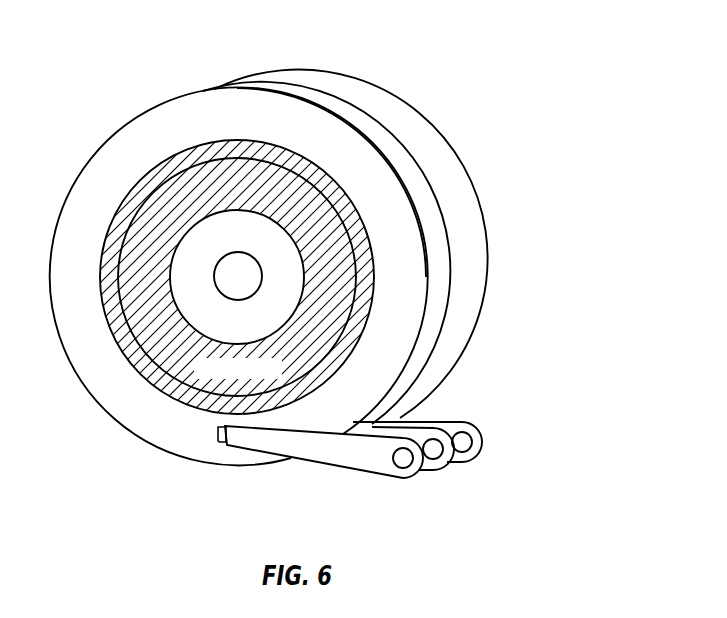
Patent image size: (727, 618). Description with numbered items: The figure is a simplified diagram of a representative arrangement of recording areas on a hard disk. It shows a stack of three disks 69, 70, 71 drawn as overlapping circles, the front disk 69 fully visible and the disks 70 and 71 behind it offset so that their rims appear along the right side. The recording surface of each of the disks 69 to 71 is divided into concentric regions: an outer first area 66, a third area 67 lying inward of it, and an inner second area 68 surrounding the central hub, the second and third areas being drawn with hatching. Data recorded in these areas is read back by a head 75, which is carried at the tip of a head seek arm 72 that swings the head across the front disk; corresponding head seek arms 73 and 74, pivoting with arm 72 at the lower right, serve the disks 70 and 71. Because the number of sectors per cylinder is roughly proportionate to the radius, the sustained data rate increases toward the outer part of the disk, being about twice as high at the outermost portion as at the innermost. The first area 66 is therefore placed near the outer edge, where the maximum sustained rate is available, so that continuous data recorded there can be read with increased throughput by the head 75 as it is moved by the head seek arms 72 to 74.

The first area 66 is at (233, 96).
The third area 67 is at (370, 277).
The second area 68 is at (222, 395).
The disk 69 is at (345, 122).
The disk 70 is at (367, 107).
The disk 71 is at (412, 112).
The head seek arm 72 is at (403, 479).
The head seek arm 73 is at (433, 471).
The head seek arm 74 is at (474, 461).
The head 75 is at (220, 442).